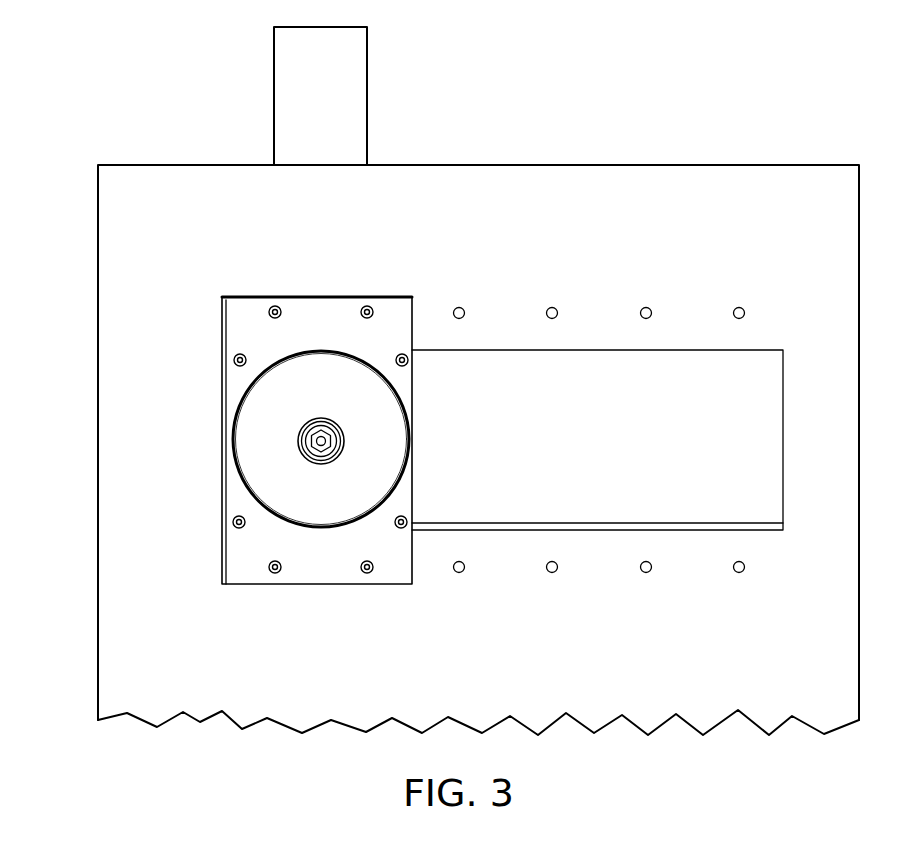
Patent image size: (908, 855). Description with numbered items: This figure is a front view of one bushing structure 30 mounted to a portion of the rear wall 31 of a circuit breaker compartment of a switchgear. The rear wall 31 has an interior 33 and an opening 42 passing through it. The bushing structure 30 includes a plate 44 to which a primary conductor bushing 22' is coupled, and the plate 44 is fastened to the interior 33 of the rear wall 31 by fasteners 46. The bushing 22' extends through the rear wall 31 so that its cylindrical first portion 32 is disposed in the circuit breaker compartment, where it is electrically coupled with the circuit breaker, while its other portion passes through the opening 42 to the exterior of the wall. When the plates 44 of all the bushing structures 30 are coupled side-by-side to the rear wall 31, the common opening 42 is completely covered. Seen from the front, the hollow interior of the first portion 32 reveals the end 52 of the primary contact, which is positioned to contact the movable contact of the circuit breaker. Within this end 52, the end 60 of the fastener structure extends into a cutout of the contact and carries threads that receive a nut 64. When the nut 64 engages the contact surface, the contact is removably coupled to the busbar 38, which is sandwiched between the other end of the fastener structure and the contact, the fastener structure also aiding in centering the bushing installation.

The primary conductor bushing 22' is at (346, 439).
The bushing structure 30 is at (412, 386).
The rear wall 31 is at (637, 164).
The cylindrical first portion 32 is at (321, 351).
The interior 33 is at (98, 228).
The busbar 38 is at (367, 88).
The opening 42 is at (659, 351).
The plate 44 is at (412, 490).
The fasteners 46 is at (274, 305).
The end of the contact 52 is at (298, 441).
The end of the fastener structure 60 is at (319, 430).
The nut 64 is at (322, 453).